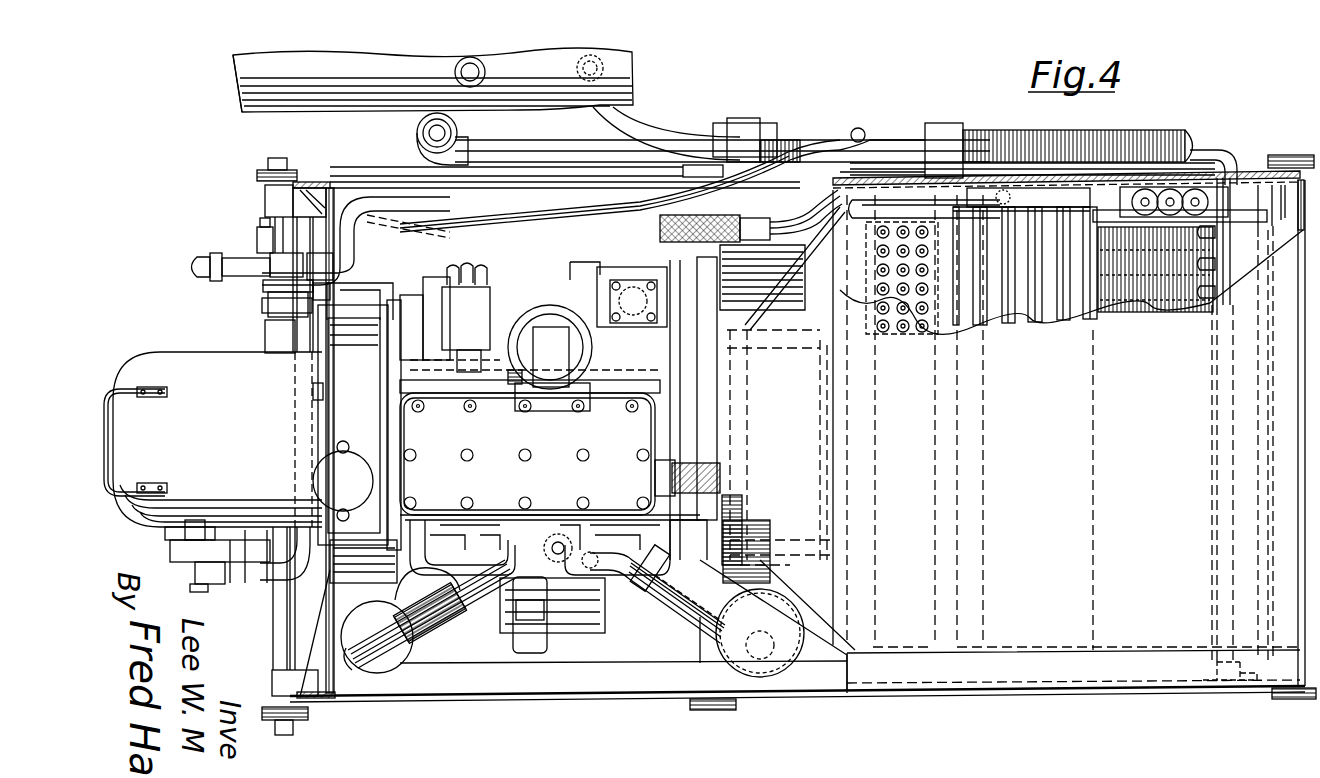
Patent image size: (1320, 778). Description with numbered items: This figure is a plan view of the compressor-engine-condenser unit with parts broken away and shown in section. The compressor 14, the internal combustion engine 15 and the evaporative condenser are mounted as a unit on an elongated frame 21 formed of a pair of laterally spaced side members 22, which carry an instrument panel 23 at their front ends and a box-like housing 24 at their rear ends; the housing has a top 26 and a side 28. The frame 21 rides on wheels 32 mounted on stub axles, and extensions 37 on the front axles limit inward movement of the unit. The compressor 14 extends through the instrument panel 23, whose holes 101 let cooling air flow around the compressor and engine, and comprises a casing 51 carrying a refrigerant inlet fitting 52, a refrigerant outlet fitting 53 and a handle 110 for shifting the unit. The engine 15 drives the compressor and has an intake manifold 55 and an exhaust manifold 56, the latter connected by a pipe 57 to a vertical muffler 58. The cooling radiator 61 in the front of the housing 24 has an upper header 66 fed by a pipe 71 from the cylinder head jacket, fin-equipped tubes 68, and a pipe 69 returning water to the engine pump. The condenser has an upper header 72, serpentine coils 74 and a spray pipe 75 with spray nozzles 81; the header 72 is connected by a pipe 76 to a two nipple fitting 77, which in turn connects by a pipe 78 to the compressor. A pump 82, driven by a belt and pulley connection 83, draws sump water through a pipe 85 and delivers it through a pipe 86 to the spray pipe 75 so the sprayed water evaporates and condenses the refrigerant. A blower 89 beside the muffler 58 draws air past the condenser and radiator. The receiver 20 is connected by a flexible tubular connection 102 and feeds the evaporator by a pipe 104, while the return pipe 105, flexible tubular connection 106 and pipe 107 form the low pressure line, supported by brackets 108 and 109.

The compressor 14 is at (219, 373).
The internal combustion engine 15 is at (470, 490).
The receiver 20 is at (302, 97).
The elongated frame 21 is at (558, 691).
The side members 22 is at (424, 700).
The instrument panel 23 is at (295, 648).
The box-like housing 24 is at (1194, 177).
The top 26 is at (1118, 655).
The side 28 is at (1168, 140).
The wheels 32 is at (272, 158).
The extensions 37 is at (290, 725).
The casing 51 is at (185, 360).
The refrigerant inlet fitting 52 is at (225, 525).
The refrigerant outlet fitting 53 is at (285, 333).
The intake manifold 55 is at (460, 545).
The exhaust manifold 56 is at (515, 549).
The pipe 57 is at (662, 585).
The muffler 58 is at (760, 633).
The radiator 61 is at (905, 326).
The upper header 66 is at (827, 250).
The fin-equipped tubes 68 is at (918, 325).
The pipe 69 is at (690, 605).
The pipe 71 is at (722, 468).
The upper header 72 is at (988, 192).
The serpentine coils 74 is at (1150, 312).
The spray pipe 75 is at (1213, 325).
The pipe 76 is at (882, 205).
The two nipple fitting 77 is at (872, 182).
The pipe 78 is at (400, 225).
The spray nozzles 81 is at (1208, 318).
The pump 82 is at (592, 277).
The belt and pulley connection 83 is at (752, 312).
The pipe 85 is at (790, 210).
The pipe 86 is at (652, 207).
The blower 89 is at (735, 555).
The holes 101 is at (335, 698).
The flexible tubular connection 102 is at (792, 142).
The pipe 104 is at (483, 85).
The pipe 105 is at (418, 146).
The flexible tubular connection 106 is at (1045, 133).
The pipe 107 is at (492, 203).
The bracket 108 is at (752, 124).
The bracket 109 is at (938, 125).
The handle 110 is at (112, 432).